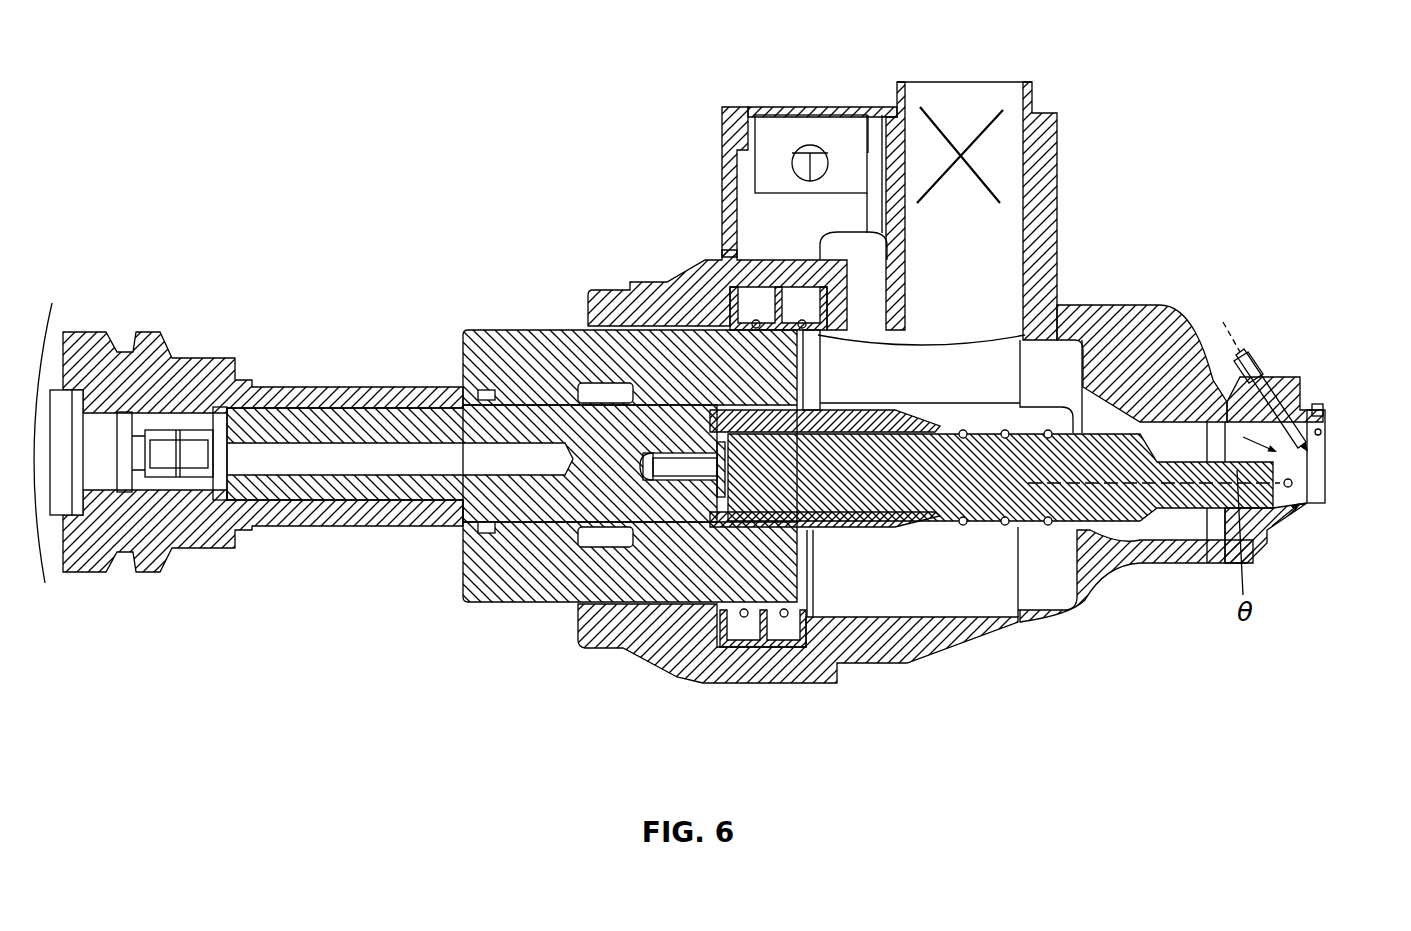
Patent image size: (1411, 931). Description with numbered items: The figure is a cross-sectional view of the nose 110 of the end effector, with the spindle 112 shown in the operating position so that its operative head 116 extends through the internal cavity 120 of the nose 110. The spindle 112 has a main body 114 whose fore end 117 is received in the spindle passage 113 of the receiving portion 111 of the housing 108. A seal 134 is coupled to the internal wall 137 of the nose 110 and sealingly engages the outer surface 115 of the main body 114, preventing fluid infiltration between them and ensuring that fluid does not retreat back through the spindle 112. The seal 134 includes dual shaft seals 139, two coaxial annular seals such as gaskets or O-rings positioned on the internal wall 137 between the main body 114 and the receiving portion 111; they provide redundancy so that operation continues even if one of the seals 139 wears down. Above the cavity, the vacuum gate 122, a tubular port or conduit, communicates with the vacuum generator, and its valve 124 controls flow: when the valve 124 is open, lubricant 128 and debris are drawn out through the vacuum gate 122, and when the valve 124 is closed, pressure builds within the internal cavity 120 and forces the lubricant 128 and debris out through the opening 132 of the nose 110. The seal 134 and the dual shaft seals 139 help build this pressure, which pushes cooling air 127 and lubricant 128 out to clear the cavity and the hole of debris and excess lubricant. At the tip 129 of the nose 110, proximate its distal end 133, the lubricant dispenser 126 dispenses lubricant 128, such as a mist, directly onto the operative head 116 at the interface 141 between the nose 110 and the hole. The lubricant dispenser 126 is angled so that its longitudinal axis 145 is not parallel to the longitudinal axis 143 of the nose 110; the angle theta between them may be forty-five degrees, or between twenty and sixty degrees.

The housing 108 is at (563, 180).
The nose 110 is at (1158, 352).
The receiving portion 111 is at (598, 289).
The spindle 112 is at (343, 362).
The spindle passage 113 is at (828, 370).
The main body 114 is at (545, 500).
The outer surface 115 is at (625, 333).
The operative head 116 is at (1127, 510).
The fore end 117 is at (830, 426).
The internal cavity 120 is at (1046, 400).
The vacuum gate 122 is at (1015, 98).
The valve 124 is at (968, 152).
The lubricant dispenser 126 is at (1255, 352).
The cooling air 127 is at (1265, 443).
The lubricant 128 is at (1287, 449).
The tip 129 is at (1335, 412).
The opening 132 is at (1294, 483).
The distal end 133 is at (1272, 553).
The seal 134 is at (730, 302).
The internal wall 137 is at (750, 290).
The dual shaft seals 139 is at (738, 635).
The interface 141 is at (1341, 510).
The longitudinal axis 143 is at (1097, 480).
The longitudinal axis 145 is at (1240, 318).